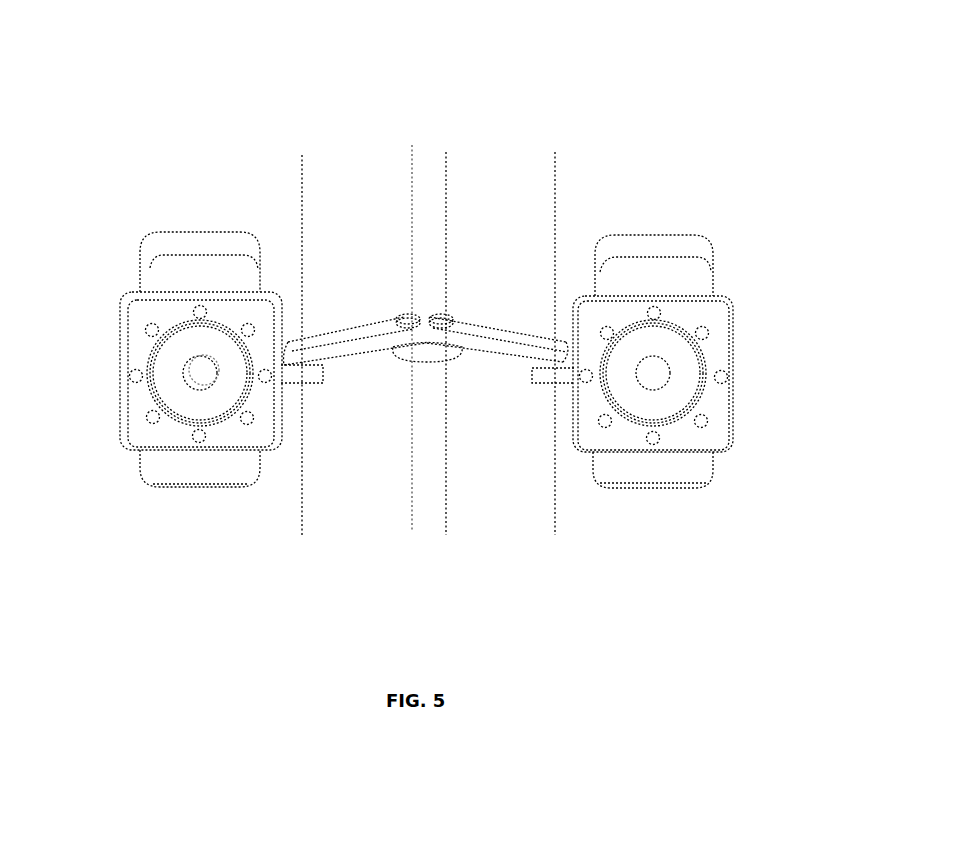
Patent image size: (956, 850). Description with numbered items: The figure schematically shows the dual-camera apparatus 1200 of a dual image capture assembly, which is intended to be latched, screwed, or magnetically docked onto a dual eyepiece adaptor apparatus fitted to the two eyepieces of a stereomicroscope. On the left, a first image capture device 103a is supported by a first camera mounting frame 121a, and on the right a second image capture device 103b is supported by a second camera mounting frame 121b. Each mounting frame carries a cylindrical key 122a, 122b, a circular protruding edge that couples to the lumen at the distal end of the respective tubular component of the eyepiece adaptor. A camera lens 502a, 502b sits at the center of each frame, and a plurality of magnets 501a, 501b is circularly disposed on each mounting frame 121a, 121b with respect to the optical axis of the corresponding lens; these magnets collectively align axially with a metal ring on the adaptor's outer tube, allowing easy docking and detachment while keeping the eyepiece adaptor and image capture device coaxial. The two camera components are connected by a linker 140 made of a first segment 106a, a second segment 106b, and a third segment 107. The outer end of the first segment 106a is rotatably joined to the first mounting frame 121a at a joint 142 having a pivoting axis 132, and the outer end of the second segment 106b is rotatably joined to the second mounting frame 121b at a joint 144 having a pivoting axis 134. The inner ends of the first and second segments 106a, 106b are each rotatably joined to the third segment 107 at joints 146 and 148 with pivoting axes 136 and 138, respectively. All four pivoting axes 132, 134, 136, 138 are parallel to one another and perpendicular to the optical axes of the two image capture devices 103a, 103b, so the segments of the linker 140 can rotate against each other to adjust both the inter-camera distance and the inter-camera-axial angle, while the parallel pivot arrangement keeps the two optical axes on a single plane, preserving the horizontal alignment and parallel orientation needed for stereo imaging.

The dual-camera apparatus 1200 is at (717, 110).
The first image capture device 103a is at (203, 263).
The second image capture device 103b is at (655, 268).
The first camera mounting frame 121a is at (132, 318).
The second camera mounting frame 121b is at (725, 315).
The cylindrical key 122a is at (162, 352).
The cylindrical key 122b is at (640, 428).
The camera lens 502a is at (182, 379).
The camera lens 502b is at (660, 383).
The magnets 501a is at (154, 420).
The magnets 501b is at (656, 314).
The pivoting axis 132 is at (302, 178).
The pivoting axis 134 is at (555, 190).
The pivoting axis 136 is at (412, 183).
The pivoting axis 138 is at (446, 183).
The first segment 106a is at (363, 350).
The second segment 106b is at (498, 355).
The joint 142 is at (307, 342).
The joint 144 is at (553, 342).
The joint 146 is at (404, 316).
The joint 148 is at (449, 317).
The linker 140 is at (393, 423).
The third segment 107 is at (428, 360).